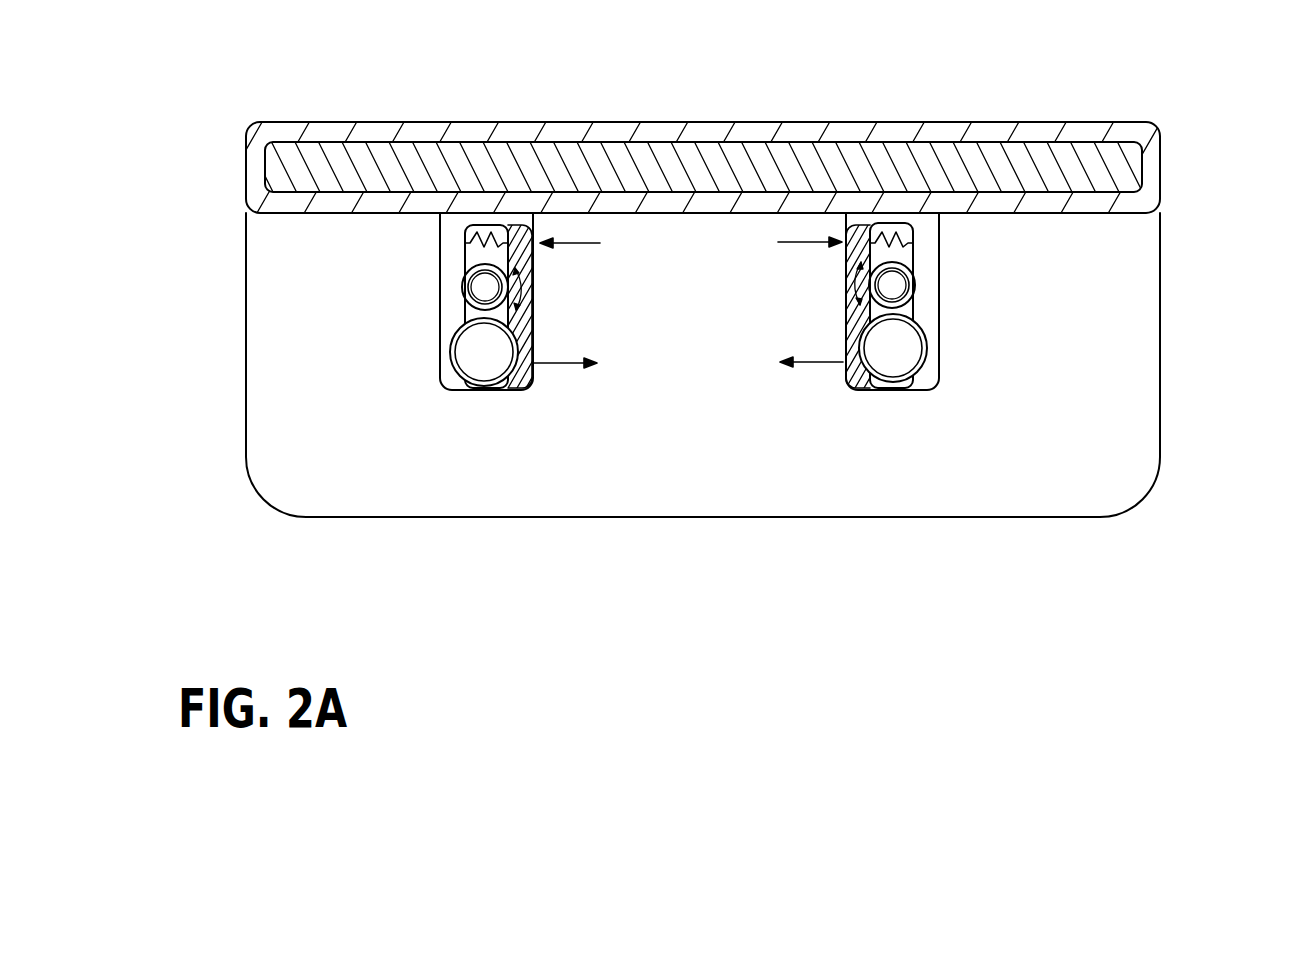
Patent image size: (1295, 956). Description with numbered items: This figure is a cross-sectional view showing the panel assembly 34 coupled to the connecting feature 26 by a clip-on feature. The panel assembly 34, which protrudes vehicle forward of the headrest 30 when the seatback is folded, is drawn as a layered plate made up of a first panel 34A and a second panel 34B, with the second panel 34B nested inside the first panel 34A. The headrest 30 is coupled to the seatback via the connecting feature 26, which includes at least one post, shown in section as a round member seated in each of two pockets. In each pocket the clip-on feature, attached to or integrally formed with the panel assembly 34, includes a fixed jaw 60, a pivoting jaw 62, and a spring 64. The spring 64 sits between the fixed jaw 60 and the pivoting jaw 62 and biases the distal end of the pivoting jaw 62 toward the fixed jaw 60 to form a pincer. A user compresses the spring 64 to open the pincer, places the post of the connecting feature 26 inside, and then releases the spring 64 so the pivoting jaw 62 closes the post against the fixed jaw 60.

The connecting feature 26 is at (485, 355).
The headrest 30 is at (1125, 340).
The panel assembly 34 is at (708, 121).
The first panel 34A is at (838, 132).
The second panel 34B is at (952, 172).
The fixed jaw 60 is at (448, 313).
The pivoting jaw 62 is at (527, 390).
The spring 64 is at (475, 247).